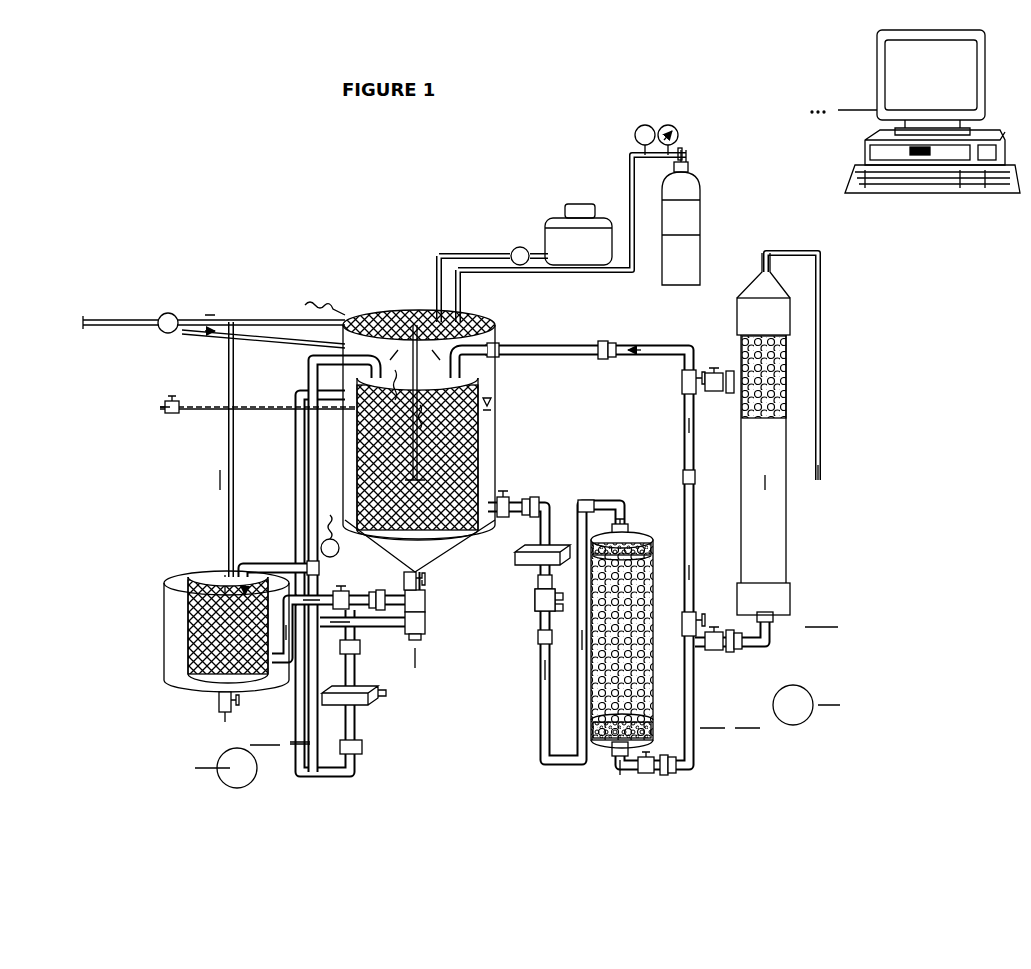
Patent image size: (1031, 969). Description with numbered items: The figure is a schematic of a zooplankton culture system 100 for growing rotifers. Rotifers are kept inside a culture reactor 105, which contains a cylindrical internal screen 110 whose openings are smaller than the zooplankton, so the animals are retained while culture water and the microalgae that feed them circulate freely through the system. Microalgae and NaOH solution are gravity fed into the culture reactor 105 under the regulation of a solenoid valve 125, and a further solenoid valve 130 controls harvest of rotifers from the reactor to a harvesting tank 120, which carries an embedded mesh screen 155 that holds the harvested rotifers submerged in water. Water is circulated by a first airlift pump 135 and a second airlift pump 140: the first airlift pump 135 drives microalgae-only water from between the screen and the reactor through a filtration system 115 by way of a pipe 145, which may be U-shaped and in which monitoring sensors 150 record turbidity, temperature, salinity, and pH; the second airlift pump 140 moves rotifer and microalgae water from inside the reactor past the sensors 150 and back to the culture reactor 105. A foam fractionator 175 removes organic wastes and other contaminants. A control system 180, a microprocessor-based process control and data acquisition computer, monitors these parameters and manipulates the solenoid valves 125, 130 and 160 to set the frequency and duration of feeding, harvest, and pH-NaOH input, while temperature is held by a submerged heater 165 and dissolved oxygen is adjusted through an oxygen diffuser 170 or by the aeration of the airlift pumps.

The zooplankton culture system 100 is at (133, 180).
The culture reactor 105 is at (488, 386).
The internal screen 110 is at (470, 456).
The filtration system 115 is at (615, 748).
The harvesting tank 120 is at (175, 655).
The solenoid valve 125 is at (512, 250).
The solenoid valve 130 is at (325, 541).
The first airlift pump 135 is at (797, 718).
The second airlift pump 140 is at (240, 775).
The pipe 145 is at (598, 504).
The monitoring sensors 150 is at (538, 600).
The mesh screen 155 is at (190, 600).
The solenoid valve 160 is at (160, 316).
The submerged heater 165 is at (465, 436).
The oxygen diffuser 170 is at (683, 213).
The foam fractionator 175 is at (778, 545).
The control system 180 is at (918, 78).